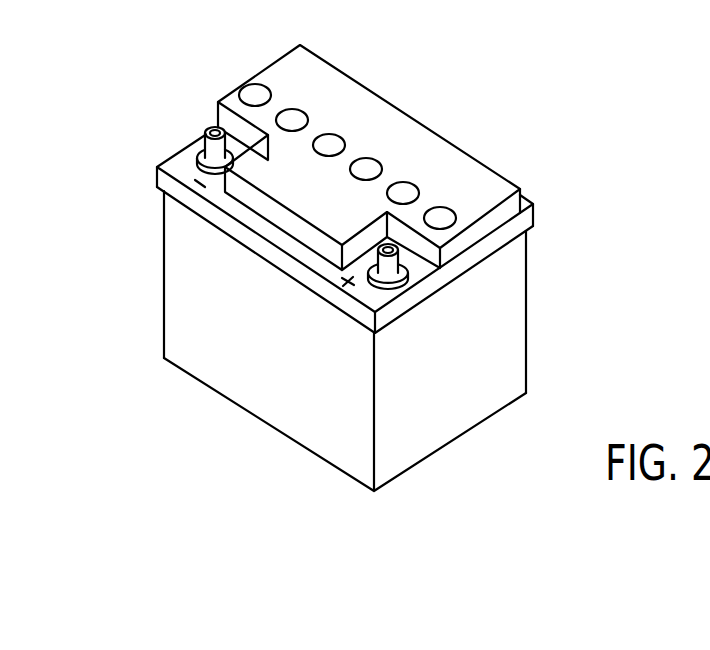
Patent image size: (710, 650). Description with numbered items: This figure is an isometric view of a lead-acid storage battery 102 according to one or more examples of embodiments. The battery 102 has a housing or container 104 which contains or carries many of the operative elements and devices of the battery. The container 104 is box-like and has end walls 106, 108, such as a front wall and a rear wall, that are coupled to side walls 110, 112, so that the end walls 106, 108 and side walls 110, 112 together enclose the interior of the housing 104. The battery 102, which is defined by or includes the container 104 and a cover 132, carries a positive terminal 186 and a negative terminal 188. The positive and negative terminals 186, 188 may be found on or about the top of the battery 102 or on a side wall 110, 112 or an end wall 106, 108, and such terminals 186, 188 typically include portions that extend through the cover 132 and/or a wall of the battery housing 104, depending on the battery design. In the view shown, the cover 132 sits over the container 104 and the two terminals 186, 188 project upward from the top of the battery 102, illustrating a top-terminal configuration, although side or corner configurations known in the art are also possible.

The lead-acid storage battery 102 is at (357, 259).
The housing or container 104 is at (357, 341).
The end wall 106 is at (485, 312).
The end wall 108 is at (164, 226).
The side wall 110 is at (192, 274).
The side wall 112 is at (362, 260).
The cover 132 is at (358, 118).
The positive terminal 186 is at (389, 254).
The negative terminal 188 is at (213, 150).